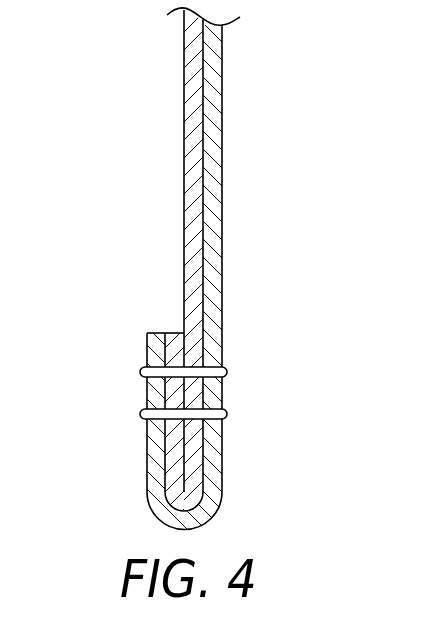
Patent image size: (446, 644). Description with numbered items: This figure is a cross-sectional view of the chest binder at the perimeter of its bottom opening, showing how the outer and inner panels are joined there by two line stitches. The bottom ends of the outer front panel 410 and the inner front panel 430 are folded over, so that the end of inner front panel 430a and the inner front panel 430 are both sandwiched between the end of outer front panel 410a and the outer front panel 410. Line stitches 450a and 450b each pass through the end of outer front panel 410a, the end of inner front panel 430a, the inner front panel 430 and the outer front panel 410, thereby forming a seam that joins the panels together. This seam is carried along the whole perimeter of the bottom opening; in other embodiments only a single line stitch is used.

The outer front panel 410 is at (222, 155).
The end of outer front panel 410a is at (147, 345).
The inner front panel 430 is at (182, 193).
The end of inner front panel 430a is at (176, 332).
The line stitch 450a is at (227, 372).
The line stitch 450b is at (227, 414).